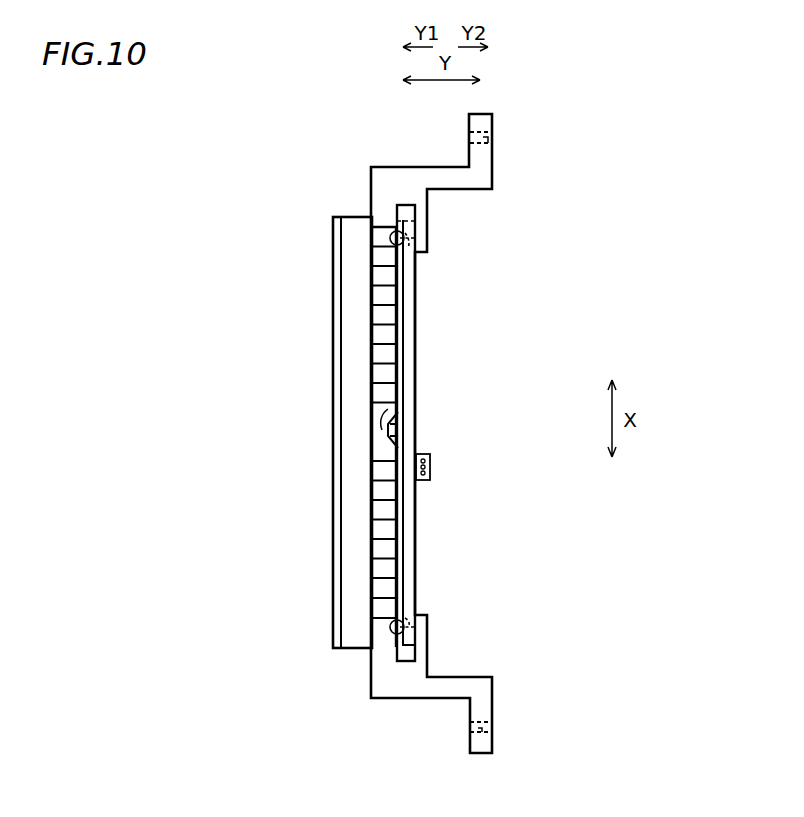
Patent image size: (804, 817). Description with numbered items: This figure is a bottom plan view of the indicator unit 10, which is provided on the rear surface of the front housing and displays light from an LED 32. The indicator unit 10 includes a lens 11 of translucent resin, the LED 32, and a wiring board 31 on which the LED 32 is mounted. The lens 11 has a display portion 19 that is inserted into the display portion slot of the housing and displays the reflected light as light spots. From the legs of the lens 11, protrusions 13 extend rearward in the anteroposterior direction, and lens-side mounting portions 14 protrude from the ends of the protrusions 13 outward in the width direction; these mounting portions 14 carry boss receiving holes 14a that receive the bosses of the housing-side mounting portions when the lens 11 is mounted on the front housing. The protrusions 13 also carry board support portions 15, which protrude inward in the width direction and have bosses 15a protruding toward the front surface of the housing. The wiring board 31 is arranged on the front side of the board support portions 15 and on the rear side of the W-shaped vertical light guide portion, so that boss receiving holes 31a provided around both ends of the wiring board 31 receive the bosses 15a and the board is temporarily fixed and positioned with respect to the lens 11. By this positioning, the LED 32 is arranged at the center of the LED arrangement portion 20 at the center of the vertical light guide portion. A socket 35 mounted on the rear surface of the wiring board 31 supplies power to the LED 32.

The indicator unit 10 is at (608, 153).
The lens 11 is at (321, 243).
The protrusions 13 is at (442, 178).
The lens-side mounting portions 14 is at (487, 123).
The boss receiving holes 14a is at (489, 137).
The board support portions 15 is at (420, 213).
The bosses 15a is at (396, 228).
The display portion 19 is at (385, 548).
The LED arrangement portion 20 is at (385, 409).
The wiring board 31 is at (409, 313).
The boss receiving holes 31a is at (410, 243).
The LED 32 is at (405, 430).
The socket 35 is at (432, 468).